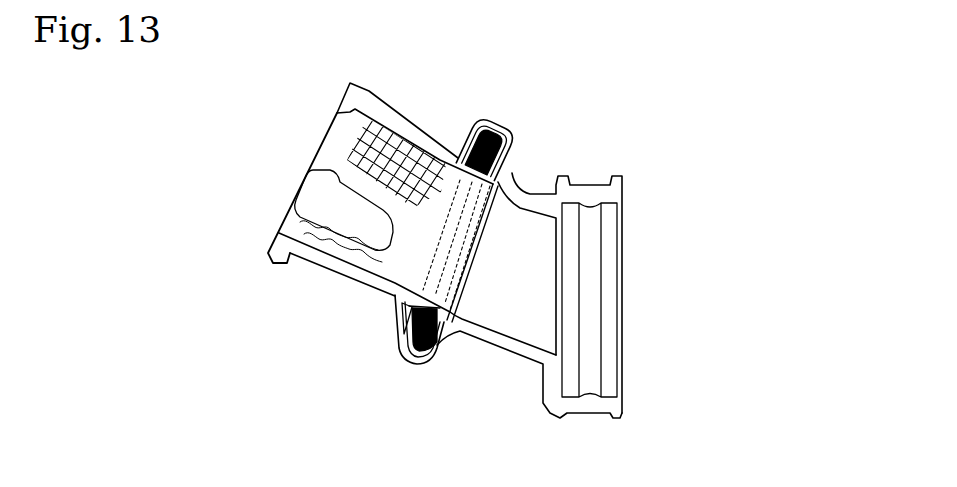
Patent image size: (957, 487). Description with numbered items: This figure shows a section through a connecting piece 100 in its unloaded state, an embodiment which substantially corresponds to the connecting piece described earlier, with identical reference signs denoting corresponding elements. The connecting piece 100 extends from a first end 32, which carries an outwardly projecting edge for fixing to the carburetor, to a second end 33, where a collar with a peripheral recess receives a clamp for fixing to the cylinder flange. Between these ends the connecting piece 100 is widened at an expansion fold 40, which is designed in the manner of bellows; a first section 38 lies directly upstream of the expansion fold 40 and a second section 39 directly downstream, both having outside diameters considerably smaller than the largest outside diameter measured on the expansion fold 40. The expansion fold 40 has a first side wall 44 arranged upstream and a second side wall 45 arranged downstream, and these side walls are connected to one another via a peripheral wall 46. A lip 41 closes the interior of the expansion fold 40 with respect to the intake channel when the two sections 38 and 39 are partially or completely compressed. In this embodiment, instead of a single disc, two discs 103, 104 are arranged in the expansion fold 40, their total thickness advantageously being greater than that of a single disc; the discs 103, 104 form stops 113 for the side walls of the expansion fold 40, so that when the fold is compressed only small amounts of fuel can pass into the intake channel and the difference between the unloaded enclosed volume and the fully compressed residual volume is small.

The connecting piece 100 is at (708, 69).
The first end 32 is at (279, 169).
The second end 33 is at (646, 279).
The first section 38 is at (338, 268).
The second section 39 is at (523, 348).
The expansion fold 40 is at (388, 362).
The lip 41 is at (496, 181).
The first side wall 44 is at (398, 322).
The second side wall 45 is at (415, 361).
The peripheral wall 46 is at (434, 342).
The disc 103 is at (499, 153).
The disc 104 is at (480, 142).
The stops 113 is at (472, 150).